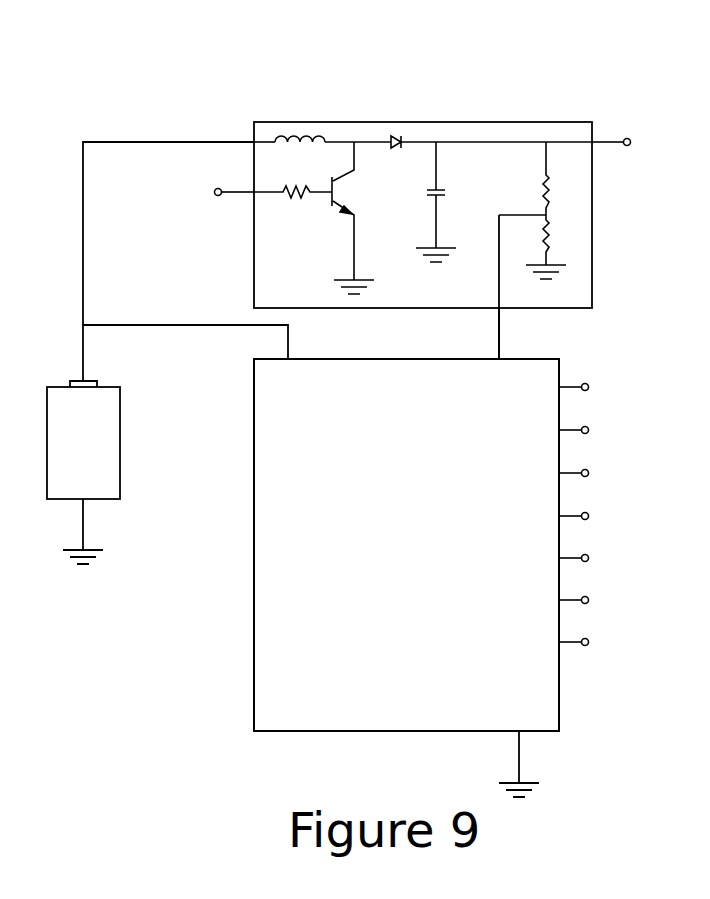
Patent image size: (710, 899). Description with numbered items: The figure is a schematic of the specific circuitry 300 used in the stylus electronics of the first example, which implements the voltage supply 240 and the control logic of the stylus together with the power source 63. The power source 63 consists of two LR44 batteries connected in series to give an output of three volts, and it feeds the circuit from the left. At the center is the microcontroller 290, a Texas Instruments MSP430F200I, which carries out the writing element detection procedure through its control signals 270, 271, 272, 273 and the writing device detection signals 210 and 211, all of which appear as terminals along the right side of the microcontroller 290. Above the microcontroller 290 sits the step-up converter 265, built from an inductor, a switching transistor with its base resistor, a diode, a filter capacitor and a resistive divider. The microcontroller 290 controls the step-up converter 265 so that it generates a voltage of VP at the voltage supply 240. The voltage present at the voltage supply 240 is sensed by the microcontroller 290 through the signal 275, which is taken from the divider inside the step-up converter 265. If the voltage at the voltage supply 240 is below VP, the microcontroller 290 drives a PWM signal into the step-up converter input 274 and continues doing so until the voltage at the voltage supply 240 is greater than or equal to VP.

The circuitry 300 is at (311, 411).
The step-up converter 265 is at (423, 200).
The voltage supply 240 is at (634, 143).
The step-up converter input 274 is at (396, 375).
The signal 275 is at (529, 333).
The power source 63 is at (83, 472).
The microcontroller 290 is at (406, 545).
The control signal 270 is at (595, 387).
The control signal 271 is at (595, 430).
The control signal 272 is at (595, 473).
The control signal 273 is at (595, 516).
The writing device detection signal 210 is at (595, 600).
The writing device detection signal 211 is at (595, 642).